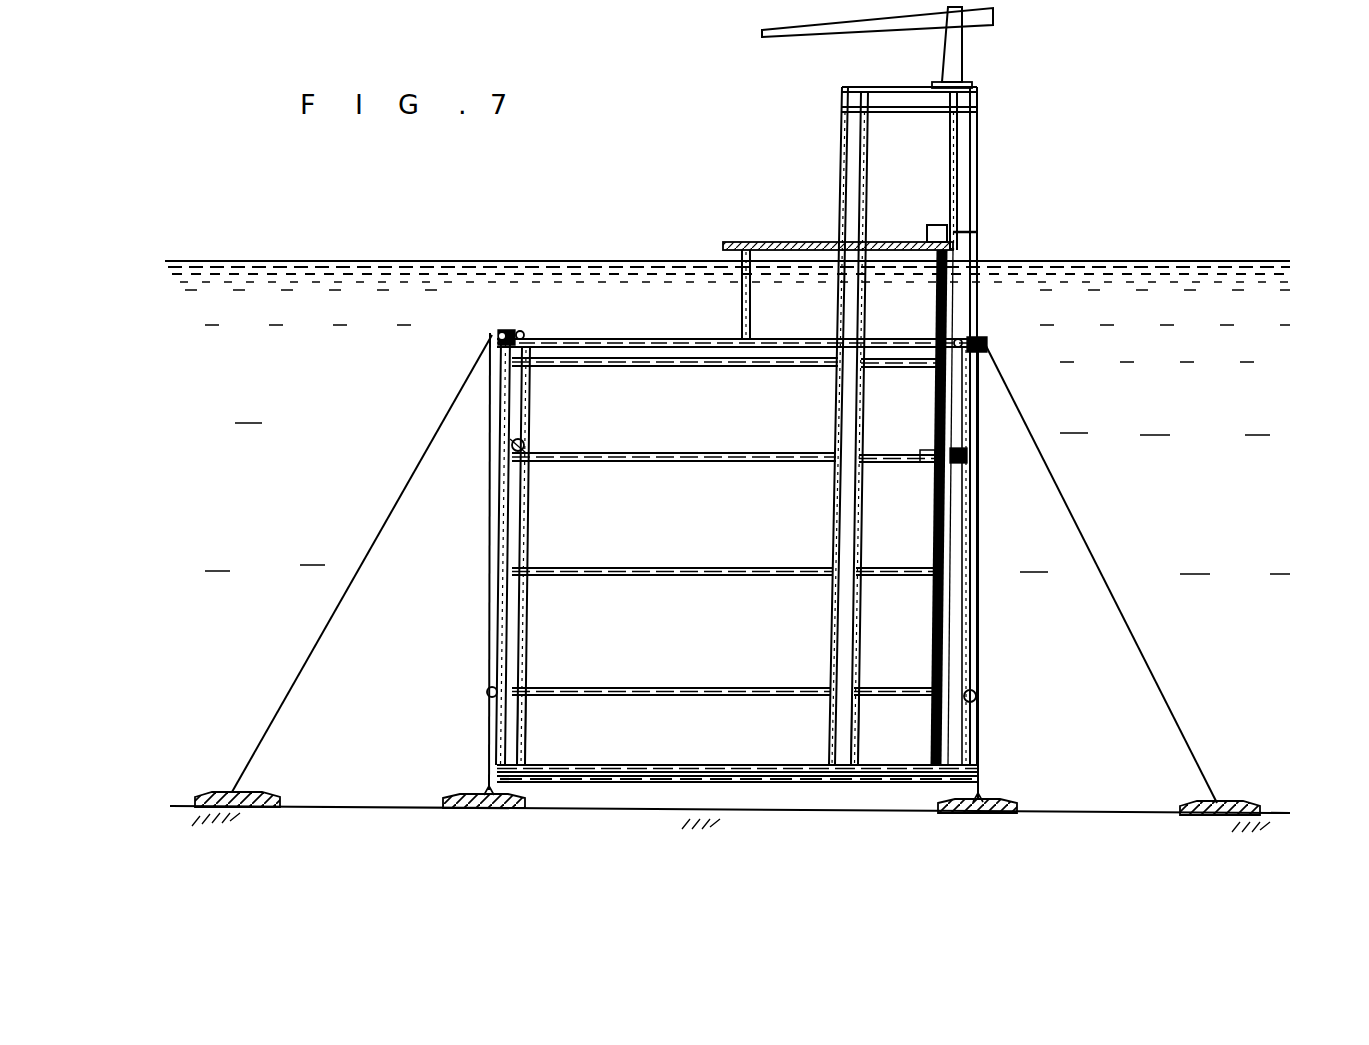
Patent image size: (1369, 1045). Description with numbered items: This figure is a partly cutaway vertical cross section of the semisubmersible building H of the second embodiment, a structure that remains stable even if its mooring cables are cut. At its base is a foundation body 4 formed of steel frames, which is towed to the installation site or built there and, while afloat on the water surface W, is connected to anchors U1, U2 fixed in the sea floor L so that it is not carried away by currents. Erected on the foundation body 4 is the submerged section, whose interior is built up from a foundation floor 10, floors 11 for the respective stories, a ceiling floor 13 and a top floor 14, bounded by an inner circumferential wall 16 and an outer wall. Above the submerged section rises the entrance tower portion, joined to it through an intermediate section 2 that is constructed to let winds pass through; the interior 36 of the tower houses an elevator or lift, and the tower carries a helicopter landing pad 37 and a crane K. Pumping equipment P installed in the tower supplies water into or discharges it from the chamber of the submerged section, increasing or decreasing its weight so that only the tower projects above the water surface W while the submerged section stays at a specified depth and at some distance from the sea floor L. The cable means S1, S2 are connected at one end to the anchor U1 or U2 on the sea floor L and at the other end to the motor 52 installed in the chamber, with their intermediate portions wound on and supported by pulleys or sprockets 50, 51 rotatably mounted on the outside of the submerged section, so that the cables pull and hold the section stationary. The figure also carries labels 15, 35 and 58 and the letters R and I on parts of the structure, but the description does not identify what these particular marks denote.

The intermediate section 2 is at (914, 295).
The foundation body 4 is at (968, 785).
The foundation floor 10 is at (606, 774).
The floors 11 is at (742, 460).
The ceiling floor 13 is at (632, 365).
The top floor 14 is at (620, 340).
The lower column 15 is at (524, 748).
The inner circumferential wall 16 is at (532, 436).
The tower frame 35 is at (842, 135).
The interior of the entrance tower portion 36 is at (924, 166).
The helicopter landing pad 37 is at (734, 239).
The pulley or sprocket 50 is at (500, 331).
The pulley or sprocket 51 is at (524, 331).
The motor 52 is at (512, 449).
The lower fitting 58 is at (486, 704).
The crane K is at (993, 22).
The pumping equipment P is at (948, 226).
The water surface W is at (1168, 272).
The semisubmersible building H is at (968, 316).
The sea floor L is at (368, 807).
The room R is at (725, 435).
The lower space I is at (704, 750).
The cable means S1 is at (1149, 614).
The cable means S2 is at (1012, 614).
The anchor U1 is at (1245, 776).
The anchor U2 is at (1040, 794).